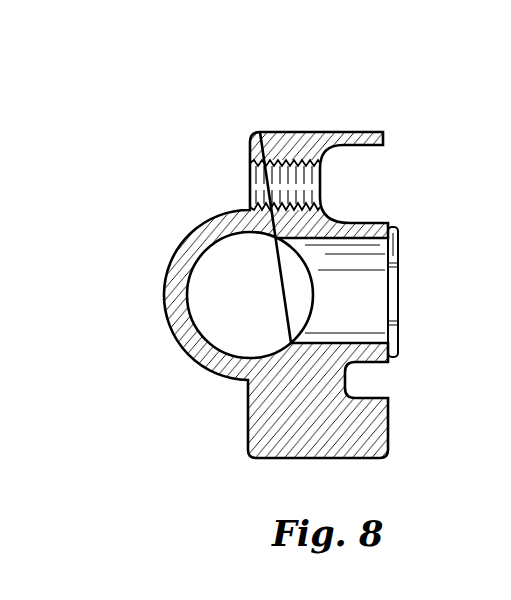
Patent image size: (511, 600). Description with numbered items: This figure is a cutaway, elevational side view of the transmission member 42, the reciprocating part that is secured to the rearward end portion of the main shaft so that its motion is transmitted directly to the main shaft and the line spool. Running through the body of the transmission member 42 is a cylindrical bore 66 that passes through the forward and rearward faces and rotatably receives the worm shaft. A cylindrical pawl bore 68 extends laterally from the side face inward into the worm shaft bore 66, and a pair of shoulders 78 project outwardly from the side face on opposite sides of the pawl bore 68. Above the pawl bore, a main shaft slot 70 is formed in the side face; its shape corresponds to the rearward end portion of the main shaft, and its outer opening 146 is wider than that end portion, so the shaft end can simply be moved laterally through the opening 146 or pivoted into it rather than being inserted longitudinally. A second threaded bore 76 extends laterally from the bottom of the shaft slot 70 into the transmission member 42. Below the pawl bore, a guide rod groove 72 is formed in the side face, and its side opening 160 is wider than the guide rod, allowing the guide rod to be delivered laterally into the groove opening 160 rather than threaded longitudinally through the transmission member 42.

The transmission member 42 is at (398, 132).
The cylindrical bore 66 is at (272, 300).
The pawl bore 68 is at (365, 306).
The main shaft slot 70 is at (355, 214).
The guide rod groove 72 is at (378, 378).
The second threaded bore 76 is at (246, 178).
The shoulders 78 is at (400, 248).
The outer opening 146 is at (368, 182).
The side opening 160 is at (380, 393).